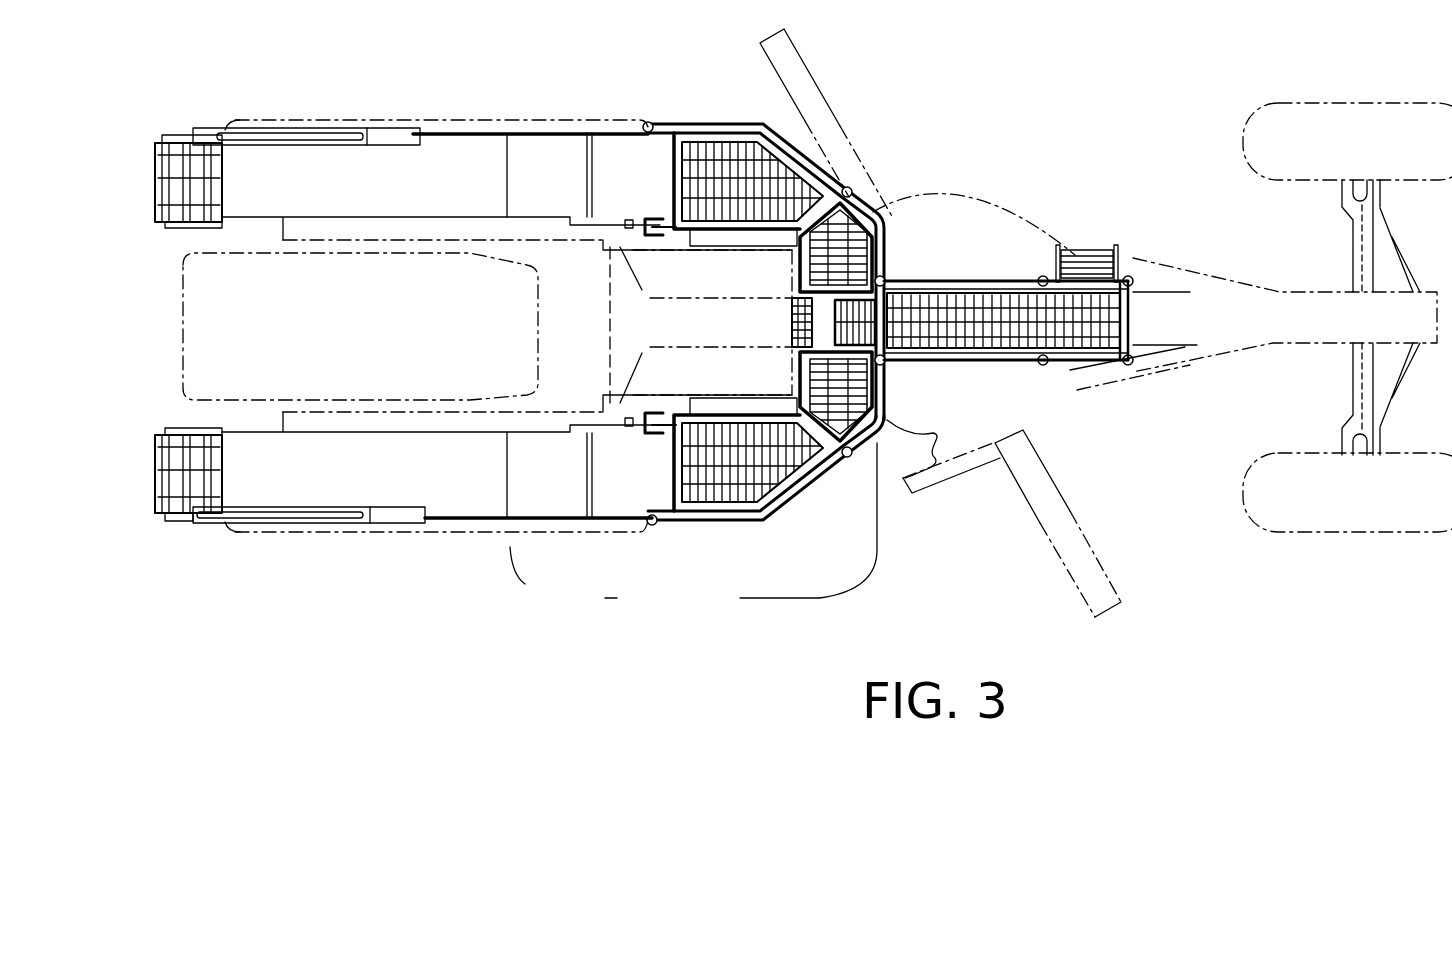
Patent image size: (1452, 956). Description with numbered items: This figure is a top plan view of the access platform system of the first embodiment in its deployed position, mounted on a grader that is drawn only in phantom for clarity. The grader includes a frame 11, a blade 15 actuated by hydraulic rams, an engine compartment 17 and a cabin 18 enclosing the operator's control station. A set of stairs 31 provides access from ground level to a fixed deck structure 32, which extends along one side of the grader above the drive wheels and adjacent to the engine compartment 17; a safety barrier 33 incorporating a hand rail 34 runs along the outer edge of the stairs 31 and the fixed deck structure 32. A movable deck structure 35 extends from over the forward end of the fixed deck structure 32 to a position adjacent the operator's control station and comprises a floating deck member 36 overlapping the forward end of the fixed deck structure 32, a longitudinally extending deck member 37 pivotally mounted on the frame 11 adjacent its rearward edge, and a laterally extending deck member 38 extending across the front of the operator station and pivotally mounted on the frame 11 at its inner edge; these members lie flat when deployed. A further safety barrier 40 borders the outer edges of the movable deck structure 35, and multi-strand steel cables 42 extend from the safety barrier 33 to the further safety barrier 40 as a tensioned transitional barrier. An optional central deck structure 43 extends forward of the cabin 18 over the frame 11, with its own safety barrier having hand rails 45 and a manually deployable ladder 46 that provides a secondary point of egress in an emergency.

The frame 11 is at (1173, 320).
The blade 15 is at (805, 92).
The engine compartment 17 is at (262, 327).
The cabin 18 is at (607, 370).
The stairs 31 is at (180, 137).
The fixed deck structure 32 is at (352, 180).
The safety barrier 33 is at (403, 127).
The hand rail 34 is at (210, 137).
The movable deck structure 35 is at (680, 612).
The floating deck member 36 is at (545, 170).
The longitudinally extending deck member 37 is at (715, 150).
The laterally extending deck member 38 is at (850, 243).
The further safety barrier 40 is at (820, 482).
The multi-strand steel cables 42 is at (447, 523).
The central deck structure 43 is at (997, 300).
The hand rails 45 is at (1013, 367).
The manually deployable ladder 46 is at (1073, 253).